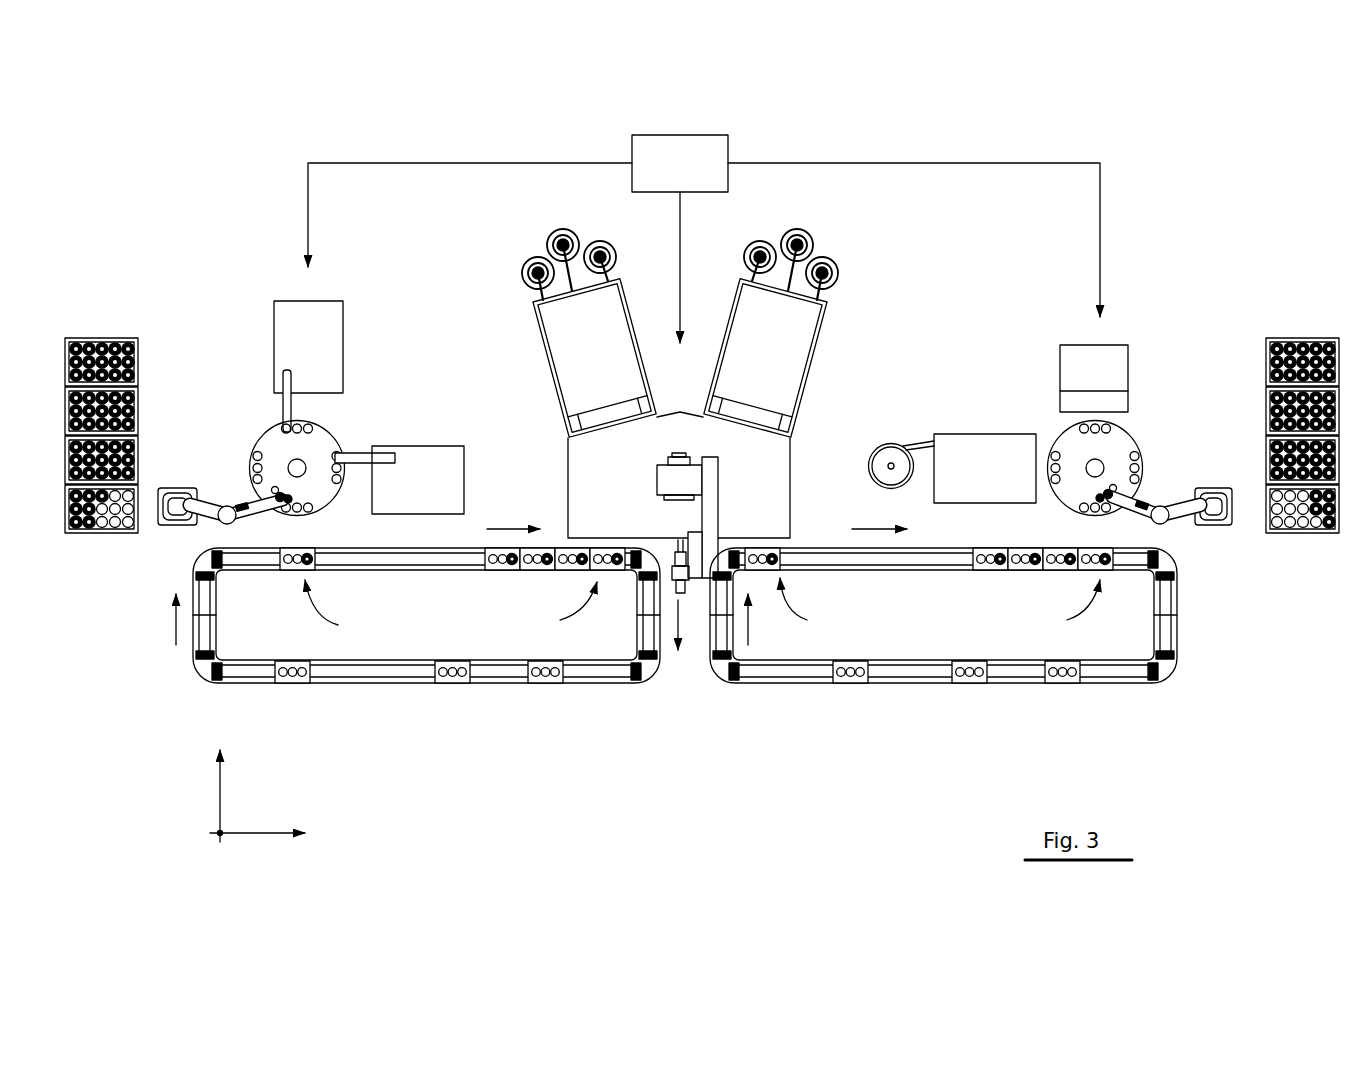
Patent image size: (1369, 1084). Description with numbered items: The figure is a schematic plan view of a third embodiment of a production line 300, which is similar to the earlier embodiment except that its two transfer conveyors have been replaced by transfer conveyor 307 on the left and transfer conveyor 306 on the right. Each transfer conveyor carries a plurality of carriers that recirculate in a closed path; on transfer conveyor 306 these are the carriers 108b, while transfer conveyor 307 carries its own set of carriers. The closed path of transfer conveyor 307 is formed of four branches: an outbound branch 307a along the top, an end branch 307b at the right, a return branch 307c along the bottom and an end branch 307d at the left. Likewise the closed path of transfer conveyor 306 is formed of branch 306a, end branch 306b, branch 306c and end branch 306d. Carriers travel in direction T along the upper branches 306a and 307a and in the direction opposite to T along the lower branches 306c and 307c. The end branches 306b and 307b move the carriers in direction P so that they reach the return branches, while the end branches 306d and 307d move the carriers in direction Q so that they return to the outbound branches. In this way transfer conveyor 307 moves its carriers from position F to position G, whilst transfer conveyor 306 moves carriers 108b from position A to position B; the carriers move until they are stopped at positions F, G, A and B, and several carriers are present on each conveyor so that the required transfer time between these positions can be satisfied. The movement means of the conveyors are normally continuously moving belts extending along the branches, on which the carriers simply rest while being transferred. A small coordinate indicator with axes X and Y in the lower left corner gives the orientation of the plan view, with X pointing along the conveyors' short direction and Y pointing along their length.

The processing system 300 is at (238, 212).
The carrier 108b is at (782, 556).
The transfer conveyor 307 is at (448, 693).
The branch 307a is at (426, 584).
The end branch 307b is at (617, 615).
The branch 307c is at (426, 703).
The end branch 307d is at (244, 615).
The transfer conveyor 306 is at (990, 693).
The branch 306a is at (943, 581).
The end branch 306b is at (1130, 615).
The branch 306c is at (943, 699).
The end branch 306d is at (700, 646).
The position F is at (327, 613).
The position G is at (572, 612).
The position A is at (804, 610).
The position B is at (1076, 611).
The direction P is at (678, 612).
The direction Q is at (176, 626).
The direction T is at (522, 528).
The X axis X is at (220, 782).
The Y axis Y is at (268, 835).